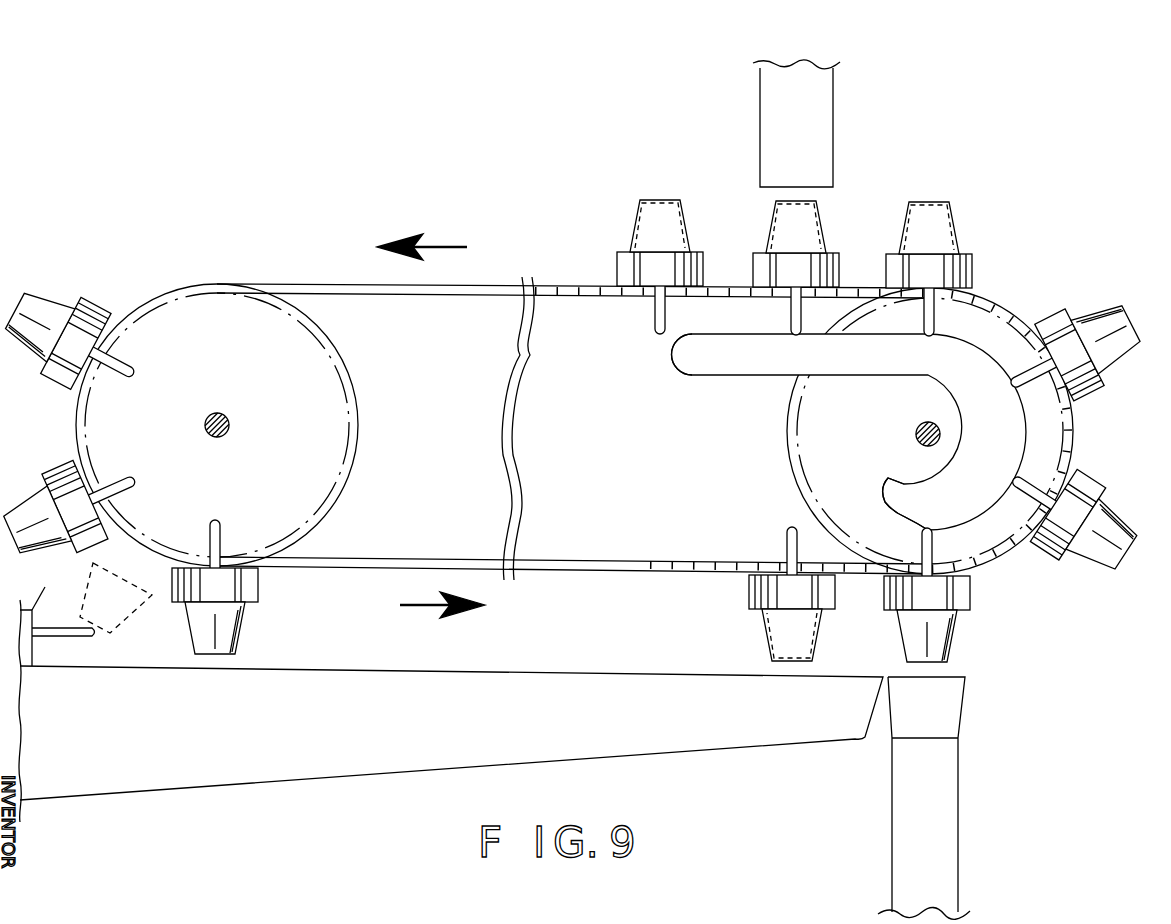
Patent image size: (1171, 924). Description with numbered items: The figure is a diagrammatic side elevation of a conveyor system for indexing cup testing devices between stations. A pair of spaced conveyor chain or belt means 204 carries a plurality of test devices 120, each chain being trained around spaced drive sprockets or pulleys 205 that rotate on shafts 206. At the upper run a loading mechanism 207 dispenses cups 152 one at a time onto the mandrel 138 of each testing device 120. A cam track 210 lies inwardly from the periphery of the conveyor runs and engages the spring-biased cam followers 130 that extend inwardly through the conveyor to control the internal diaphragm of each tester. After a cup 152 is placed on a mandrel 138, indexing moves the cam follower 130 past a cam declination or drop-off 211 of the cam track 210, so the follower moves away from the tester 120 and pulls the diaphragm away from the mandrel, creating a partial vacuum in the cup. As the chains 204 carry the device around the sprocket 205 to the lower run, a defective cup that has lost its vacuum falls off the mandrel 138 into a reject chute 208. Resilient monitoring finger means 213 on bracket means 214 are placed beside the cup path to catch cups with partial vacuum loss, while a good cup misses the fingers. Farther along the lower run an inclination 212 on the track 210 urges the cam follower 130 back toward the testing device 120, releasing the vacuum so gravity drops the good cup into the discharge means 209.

The test device 120 is at (962, 258).
The cam follower 130 is at (1020, 378).
The mandrel 138 is at (640, 228).
The cup 152 is at (679, 198).
The conveyor chain or belt means 204 is at (384, 294).
The drive sprocket or pulley 205 is at (350, 414).
The shaft 206 is at (230, 425).
The loading mechanism 207 is at (834, 110).
The reject chute 208 is at (682, 754).
The discharge means 209 is at (959, 800).
The cam track 210 is at (988, 398).
The cam declination or drop-off 211 is at (668, 350).
The inclination 212 is at (887, 490).
The monitoring finger means 213 is at (94, 634).
The bracket means 214 is at (37, 570).